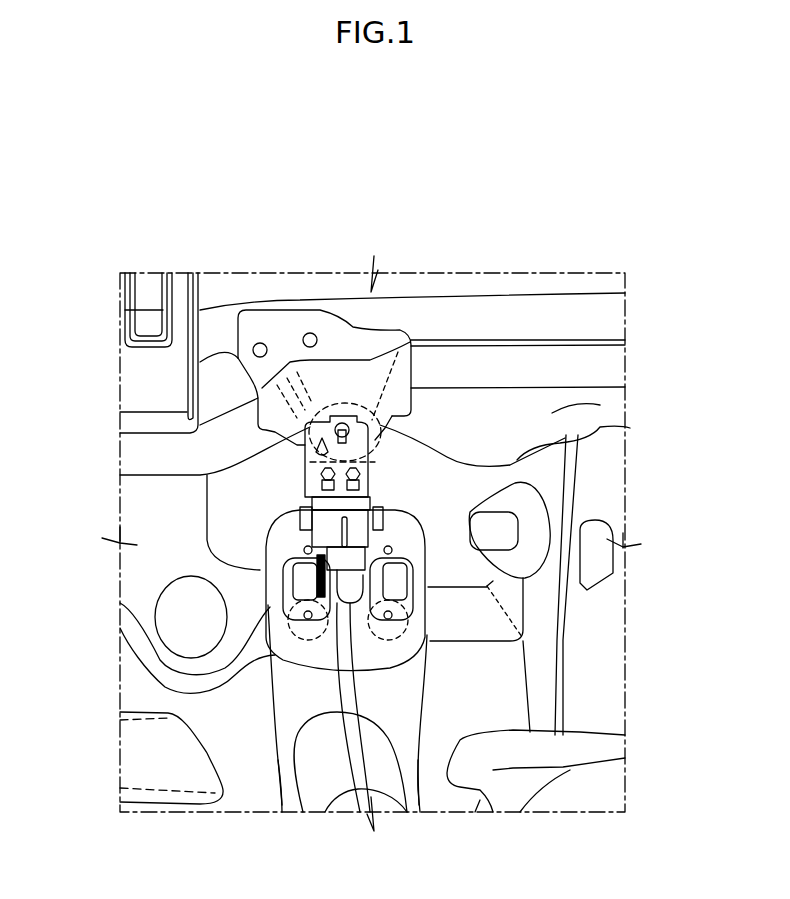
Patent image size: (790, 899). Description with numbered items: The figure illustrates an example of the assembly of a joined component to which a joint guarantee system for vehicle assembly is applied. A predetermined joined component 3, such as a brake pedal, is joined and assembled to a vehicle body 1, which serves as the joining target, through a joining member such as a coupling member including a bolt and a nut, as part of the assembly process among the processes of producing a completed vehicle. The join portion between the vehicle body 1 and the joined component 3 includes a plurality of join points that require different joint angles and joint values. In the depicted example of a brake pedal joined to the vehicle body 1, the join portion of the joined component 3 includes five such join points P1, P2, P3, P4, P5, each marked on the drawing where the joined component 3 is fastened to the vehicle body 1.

The vehicle body 1 is at (600, 405).
The joined component 3 is at (413, 602).
The join point P1 is at (293, 530).
The join point P2 is at (323, 404).
The join point P3 is at (413, 528).
The join point P4 is at (419, 805).
The join point P5 is at (282, 805).